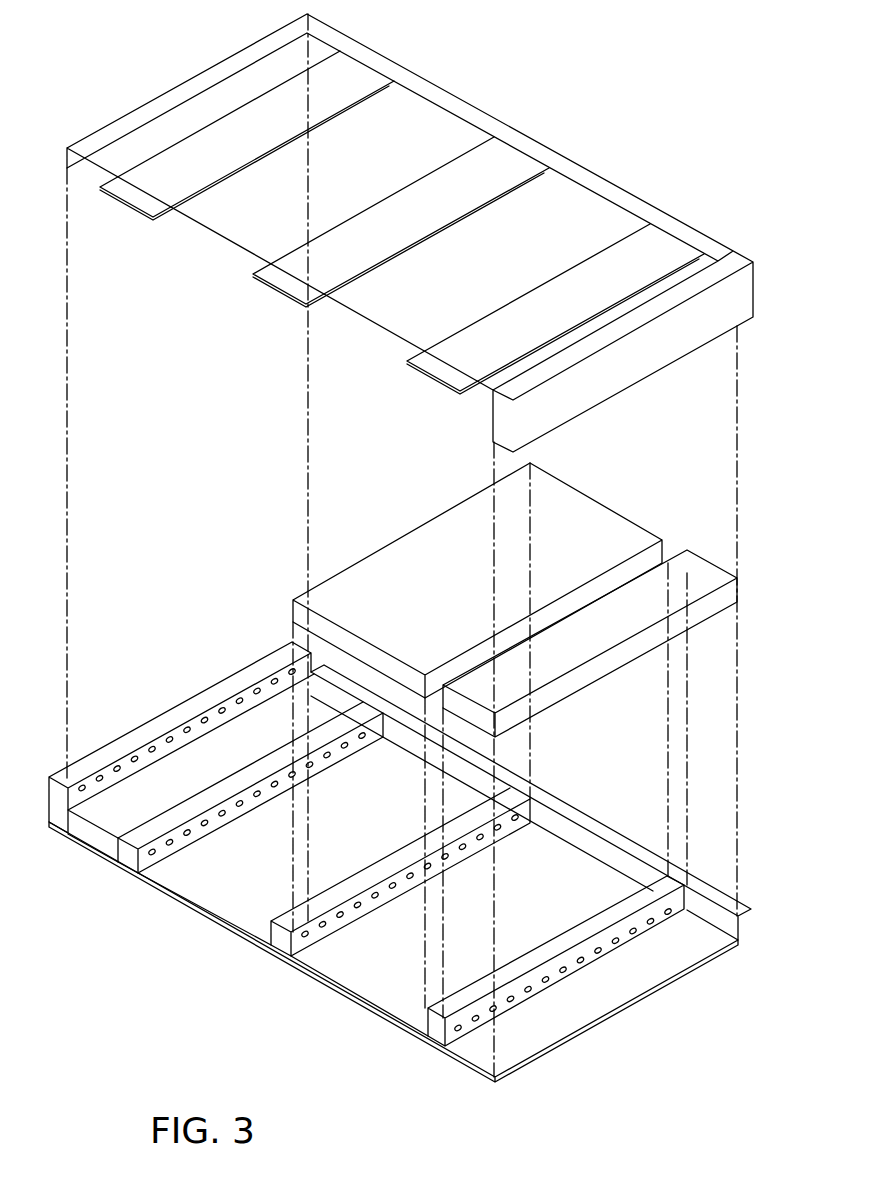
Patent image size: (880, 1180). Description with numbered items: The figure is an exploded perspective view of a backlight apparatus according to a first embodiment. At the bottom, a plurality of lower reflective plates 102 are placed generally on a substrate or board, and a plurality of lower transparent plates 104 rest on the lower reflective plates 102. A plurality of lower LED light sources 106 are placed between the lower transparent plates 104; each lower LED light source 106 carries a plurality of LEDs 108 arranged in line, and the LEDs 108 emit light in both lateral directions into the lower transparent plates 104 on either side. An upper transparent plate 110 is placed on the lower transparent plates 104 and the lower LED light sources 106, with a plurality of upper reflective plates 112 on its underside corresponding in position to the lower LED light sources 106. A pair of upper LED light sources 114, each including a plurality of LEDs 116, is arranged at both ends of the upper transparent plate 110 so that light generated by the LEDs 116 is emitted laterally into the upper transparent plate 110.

The lower reflective plate 102 is at (345, 992).
The lower transparent plate 104 is at (683, 565).
The lower LED light source 106 is at (290, 943).
The LED 108 is at (458, 1032).
The upper transparent plate 110 is at (212, 72).
The upper reflective plate 112 is at (133, 208).
The upper LED light source 114 is at (53, 823).
The LED 116 is at (170, 738).